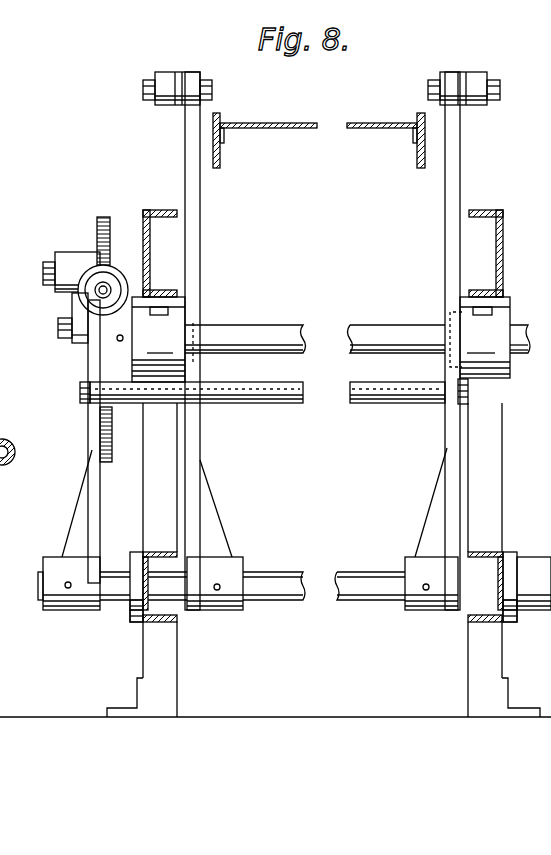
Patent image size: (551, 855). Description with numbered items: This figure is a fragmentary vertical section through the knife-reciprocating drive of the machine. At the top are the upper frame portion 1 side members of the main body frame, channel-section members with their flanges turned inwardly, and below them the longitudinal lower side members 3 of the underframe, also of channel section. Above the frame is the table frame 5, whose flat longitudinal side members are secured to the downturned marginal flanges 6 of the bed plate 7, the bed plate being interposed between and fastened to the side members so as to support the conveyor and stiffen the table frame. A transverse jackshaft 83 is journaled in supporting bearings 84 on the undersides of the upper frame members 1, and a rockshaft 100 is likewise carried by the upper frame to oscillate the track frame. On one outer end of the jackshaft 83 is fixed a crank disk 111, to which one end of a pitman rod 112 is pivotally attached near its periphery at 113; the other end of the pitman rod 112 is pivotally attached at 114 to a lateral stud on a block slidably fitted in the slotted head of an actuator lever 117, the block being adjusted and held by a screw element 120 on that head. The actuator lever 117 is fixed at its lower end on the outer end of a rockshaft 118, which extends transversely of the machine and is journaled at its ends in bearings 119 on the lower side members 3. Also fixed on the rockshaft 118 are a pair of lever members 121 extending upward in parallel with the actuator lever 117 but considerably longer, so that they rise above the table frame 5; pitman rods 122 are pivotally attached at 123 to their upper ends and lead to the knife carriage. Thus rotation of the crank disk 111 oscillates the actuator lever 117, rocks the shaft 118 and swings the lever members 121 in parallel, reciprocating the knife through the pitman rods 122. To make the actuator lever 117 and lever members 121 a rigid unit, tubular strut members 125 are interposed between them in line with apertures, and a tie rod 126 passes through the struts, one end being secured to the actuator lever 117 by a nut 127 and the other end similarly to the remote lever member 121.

The upper frame portion 1 is at (155, 211).
The longitudinal lower side members 3 is at (140, 600).
The table frame 5 is at (222, 165).
The downturned marginal flanges 6 is at (225, 140).
The bed plate 7 is at (345, 121).
The jackshaft 83 is at (355, 327).
The supporting bearings 84 is at (176, 335).
The rockshaft 100 is at (38, 460).
The crank disk 111 is at (101, 218).
The pitman rod 112 is at (80, 312).
The pivotal attachment 113 is at (72, 340).
The pivotal attachment 114 is at (55, 259).
The actuator lever 117 is at (90, 500).
The rockshaft 118 is at (348, 575).
The bearings 119 is at (138, 557).
The screw element 120 is at (80, 298).
The lever members 121 is at (195, 480).
The pitman rods 122 is at (167, 72).
The pivotal attachment 123 is at (150, 85).
The tubular strut members 125 is at (128, 402).
The tie rod 126 is at (348, 387).
The nut 127 is at (80, 397).